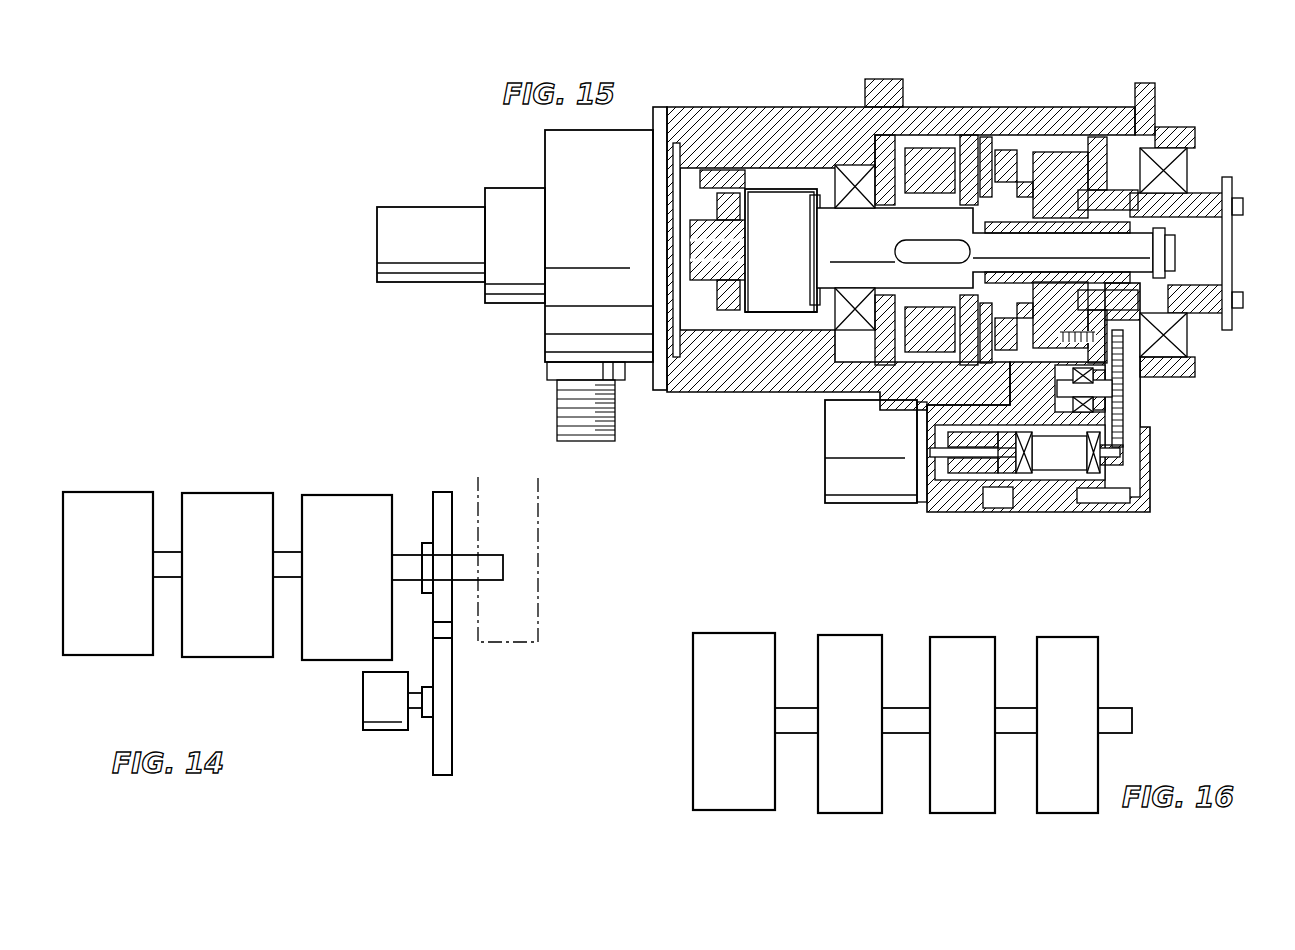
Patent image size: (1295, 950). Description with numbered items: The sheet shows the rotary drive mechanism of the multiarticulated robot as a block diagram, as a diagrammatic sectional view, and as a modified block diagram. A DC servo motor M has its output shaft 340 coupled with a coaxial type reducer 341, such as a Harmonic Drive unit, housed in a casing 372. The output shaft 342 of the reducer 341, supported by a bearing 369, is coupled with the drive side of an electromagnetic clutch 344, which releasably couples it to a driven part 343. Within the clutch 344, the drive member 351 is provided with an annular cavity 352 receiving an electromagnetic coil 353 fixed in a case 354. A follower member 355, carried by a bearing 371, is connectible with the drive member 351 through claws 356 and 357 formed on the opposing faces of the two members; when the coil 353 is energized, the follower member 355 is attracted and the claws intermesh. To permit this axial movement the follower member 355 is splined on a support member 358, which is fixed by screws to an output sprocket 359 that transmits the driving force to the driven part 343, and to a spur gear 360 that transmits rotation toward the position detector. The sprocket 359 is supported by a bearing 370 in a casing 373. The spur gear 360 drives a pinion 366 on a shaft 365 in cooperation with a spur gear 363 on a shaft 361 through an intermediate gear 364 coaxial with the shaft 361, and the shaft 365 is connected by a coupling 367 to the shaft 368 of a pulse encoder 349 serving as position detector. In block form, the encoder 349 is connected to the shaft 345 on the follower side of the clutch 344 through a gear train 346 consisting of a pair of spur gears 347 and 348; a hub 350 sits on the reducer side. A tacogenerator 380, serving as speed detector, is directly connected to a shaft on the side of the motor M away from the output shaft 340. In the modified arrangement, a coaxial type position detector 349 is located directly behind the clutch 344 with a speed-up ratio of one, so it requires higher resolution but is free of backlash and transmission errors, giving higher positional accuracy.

In FIG. 14, the output shaft 340 is at (165, 578).
In FIG. 16, the output shaft 340 is at (796, 720).
In FIG. 15, the output shaft 340 is at (663, 392).
In FIG. 14, the reducer 341 is at (232, 493).
In FIG. 16, the reducer 341 is at (885, 619).
In FIG. 15, the reducer 341 is at (795, 318).
In FIG. 14, the output shaft of the reducer 342 is at (285, 578).
In FIG. 16, the output shaft of the reducer 342 is at (906, 720).
In FIG. 15, the output shaft of the reducer 342 is at (775, 189).
In FIG. 14, the driven part 343 is at (528, 536).
In FIG. 15, the driven part 343 is at (985, 248).
In FIG. 14, the clutch 344 is at (350, 495).
In FIG. 16, the clutch 344 is at (985, 637).
In FIG. 15, the clutch 344 is at (1002, 128).
In FIG. 14, the shaft 345 is at (405, 553).
In FIG. 16, the shaft 345 is at (1122, 708).
In FIG. 14, the gear train 346 is at (466, 642).
In FIG. 14, the spur gear 347 is at (455, 528).
In FIG. 14, the spur gear 348 is at (452, 742).
In FIG. 14, the pulse encoder 349 is at (365, 718).
In FIG. 16, the pulse encoder 349 is at (1092, 641).
In FIG. 15, the pulse encoder 349 is at (830, 470).
In FIG. 15, the hub 350 is at (728, 282).
In FIG. 15, the drive member 351 is at (967, 143).
In FIG. 15, the annular cavity 352 is at (940, 163).
In FIG. 15, the electromagnetic coil 353 is at (910, 165).
In FIG. 15, the case 354 is at (1030, 170).
In FIG. 15, the follower member 355 is at (1060, 150).
In FIG. 15, the claw 356 is at (958, 355).
In FIG. 15, the claw 357 is at (1012, 370).
In FIG. 15, the support member 358 is at (1135, 102).
In FIG. 15, the output sprocket 359 is at (1228, 185).
In FIG. 15, the spur gear 360 is at (1153, 373).
In FIG. 15, the shaft 361 is at (1150, 385).
In FIG. 15, the spur gear 363 is at (1085, 400).
In FIG. 15, the intermediate gear 364 is at (1120, 440).
In FIG. 15, the shaft 365 is at (1063, 458).
In FIG. 15, the pinion 366 is at (1118, 465).
In FIG. 15, the coupling 367 is at (970, 472).
In FIG. 15, the shaft of the pulse encoder 368 is at (935, 453).
In FIG. 15, the bearing 369 is at (840, 227).
In FIG. 15, the bearing 370 is at (1170, 170).
In FIG. 15, the bearing 371 is at (1153, 223).
In FIG. 15, the casing 372 is at (675, 112).
In FIG. 15, the casing 373 is at (1158, 107).
In FIG. 15, the tacogenerator 380 is at (434, 267).
In FIG. 14, the motor M is at (110, 492).
In FIG. 16, the motor M is at (738, 633).
In FIG. 15, the motor M is at (549, 324).